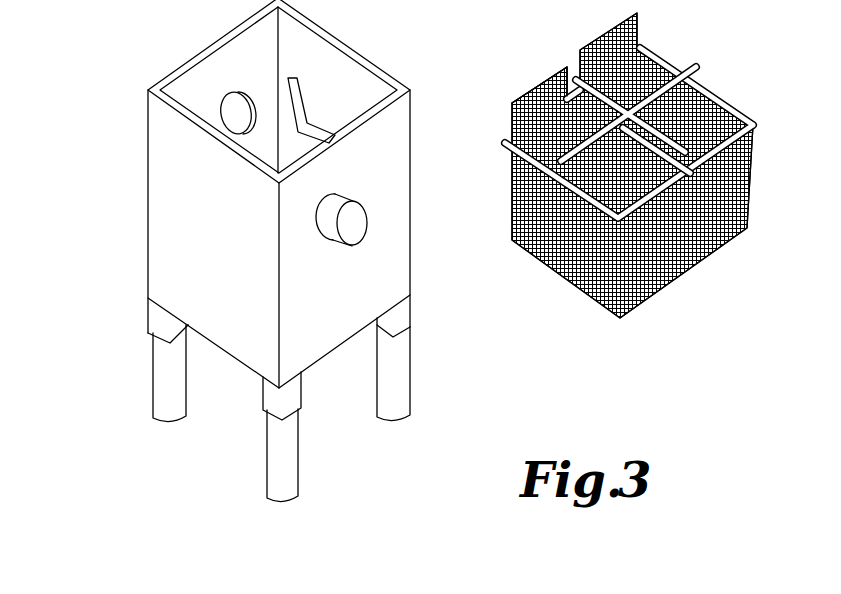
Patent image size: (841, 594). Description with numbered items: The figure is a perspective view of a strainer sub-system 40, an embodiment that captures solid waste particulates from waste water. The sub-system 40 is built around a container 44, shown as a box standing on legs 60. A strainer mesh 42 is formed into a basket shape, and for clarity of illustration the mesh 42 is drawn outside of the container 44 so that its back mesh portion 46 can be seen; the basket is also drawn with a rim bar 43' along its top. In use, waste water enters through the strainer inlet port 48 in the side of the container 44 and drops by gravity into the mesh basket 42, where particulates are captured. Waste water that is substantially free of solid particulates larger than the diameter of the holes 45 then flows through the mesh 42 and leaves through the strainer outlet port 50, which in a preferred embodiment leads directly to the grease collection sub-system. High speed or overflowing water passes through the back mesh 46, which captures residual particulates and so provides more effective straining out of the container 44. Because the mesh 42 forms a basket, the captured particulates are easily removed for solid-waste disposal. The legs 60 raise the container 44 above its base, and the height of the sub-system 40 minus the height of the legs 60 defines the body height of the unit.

The strainer sub-system 40 is at (108, 80).
The strainer mesh 42 is at (652, 292).
The basket rim bar 43' is at (508, 114).
The container 44 is at (233, 289).
The holes 45 is at (563, 280).
The back mesh portion 46 is at (528, 48).
The strainer inlet port 48 is at (367, 222).
The strainer outlet port 50 is at (243, 92).
The legs 60 is at (188, 402).